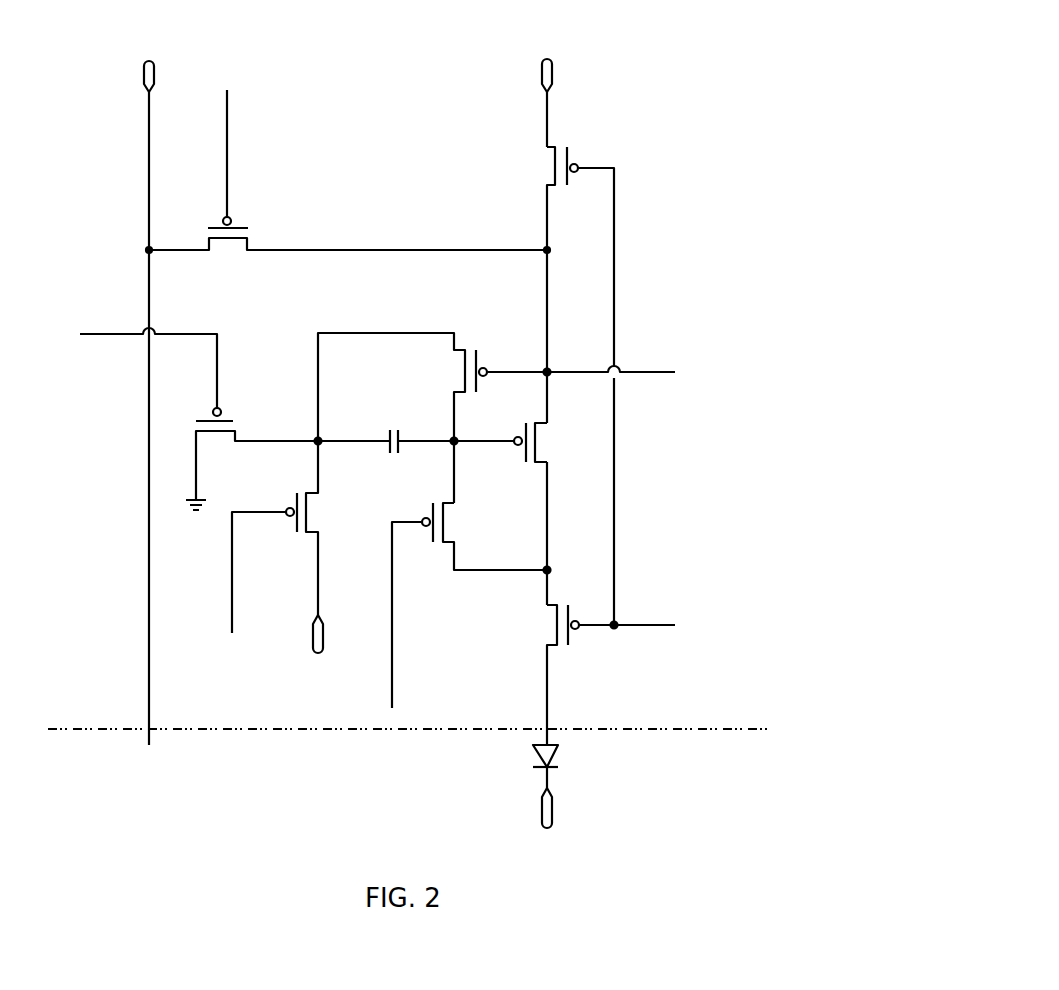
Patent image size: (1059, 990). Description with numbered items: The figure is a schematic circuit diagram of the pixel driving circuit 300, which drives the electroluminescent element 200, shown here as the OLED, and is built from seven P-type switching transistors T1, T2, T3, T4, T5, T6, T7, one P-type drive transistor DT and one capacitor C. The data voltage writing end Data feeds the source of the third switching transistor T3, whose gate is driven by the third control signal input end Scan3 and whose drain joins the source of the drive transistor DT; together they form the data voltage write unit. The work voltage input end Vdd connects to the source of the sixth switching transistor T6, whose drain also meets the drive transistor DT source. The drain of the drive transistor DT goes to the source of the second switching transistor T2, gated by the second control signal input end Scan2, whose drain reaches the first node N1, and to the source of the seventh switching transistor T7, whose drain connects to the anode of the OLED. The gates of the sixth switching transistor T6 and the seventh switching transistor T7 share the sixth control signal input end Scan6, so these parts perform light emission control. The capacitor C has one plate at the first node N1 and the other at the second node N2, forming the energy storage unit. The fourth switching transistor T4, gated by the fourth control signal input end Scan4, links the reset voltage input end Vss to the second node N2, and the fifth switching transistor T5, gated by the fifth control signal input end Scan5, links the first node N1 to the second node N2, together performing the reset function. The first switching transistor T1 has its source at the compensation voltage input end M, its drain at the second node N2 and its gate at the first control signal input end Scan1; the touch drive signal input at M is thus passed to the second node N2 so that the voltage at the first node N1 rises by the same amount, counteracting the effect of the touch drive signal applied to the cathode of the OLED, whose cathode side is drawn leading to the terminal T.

The data voltage writing end Data is at (156, 388).
The work voltage input end Vdd is at (539, 84).
The reset voltage input end Vss is at (187, 517).
The first switching transistor T1 is at (317, 528).
The second switching transistor T2 is at (486, 538).
The third switching transistor T3 is at (348, 248).
The fourth switching transistor T4 is at (257, 460).
The fifth switching transistor T5 is at (402, 418).
The sixth switching transistor T6 is at (565, 386).
The seventh switching transistor T7 is at (547, 675).
The P-type drive transistor DT is at (544, 427).
The capacitor C is at (418, 454).
The first node N1 is at (483, 454).
The second node N2 is at (336, 428).
The first control signal input end Scan1 is at (247, 586).
The second control signal input end Scan2 is at (395, 626).
The third control signal input end Scan3 is at (226, 142).
The fourth control signal input end Scan4 is at (121, 370).
The fifth control signal input end Scan5 is at (607, 367).
The sixth control signal input end Scan6 is at (649, 615).
The compensation voltage input end M is at (316, 651).
The test terminal T is at (546, 820).
The electroluminescent element OLED is at (567, 764).
The pixel driving circuit 300 is at (760, 665).
The electroluminescent element 200 is at (411, 748).